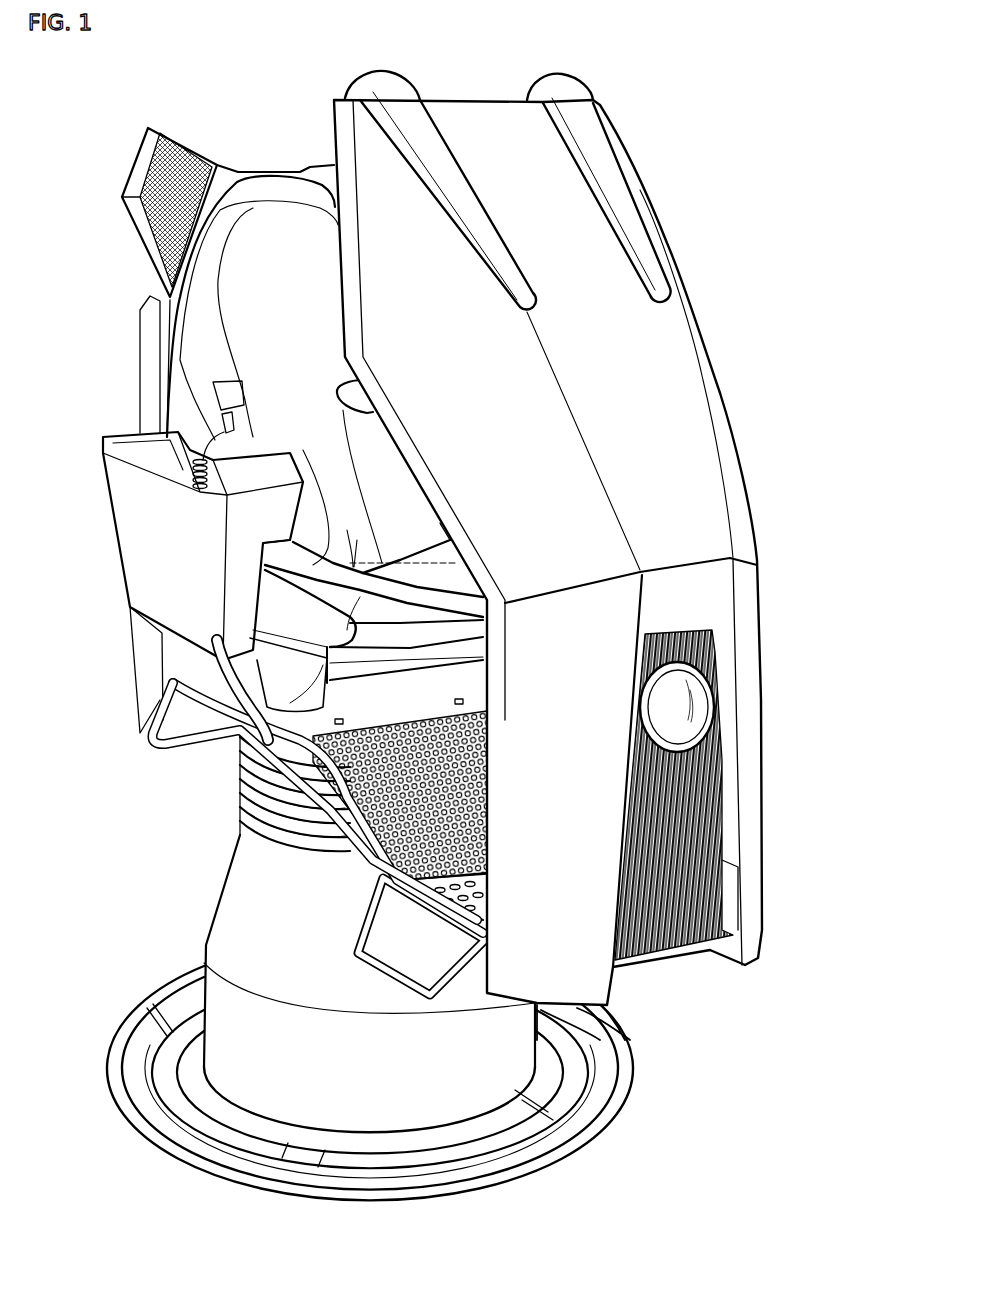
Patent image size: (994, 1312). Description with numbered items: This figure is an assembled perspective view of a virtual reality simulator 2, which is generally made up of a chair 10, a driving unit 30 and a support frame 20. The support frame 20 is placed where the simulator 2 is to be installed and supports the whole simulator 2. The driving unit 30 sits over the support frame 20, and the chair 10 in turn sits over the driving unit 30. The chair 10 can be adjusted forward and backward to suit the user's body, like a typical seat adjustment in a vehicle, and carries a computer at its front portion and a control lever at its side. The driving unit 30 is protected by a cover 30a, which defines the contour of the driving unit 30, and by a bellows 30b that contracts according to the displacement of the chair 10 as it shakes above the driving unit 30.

The virtual reality simulator 2 is at (697, 124).
The chair 10 is at (190, 343).
The support frame 20 is at (163, 1090).
The driving unit 30 is at (321, 934).
The cover 30a is at (220, 940).
The bellows 30b is at (255, 780).